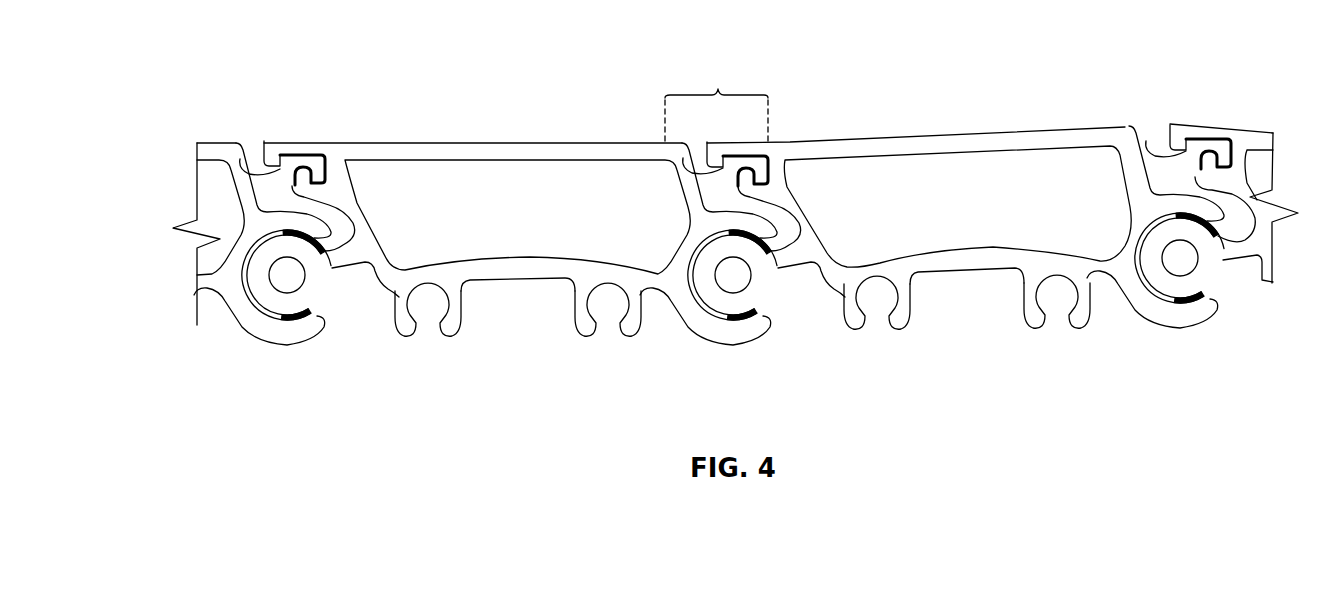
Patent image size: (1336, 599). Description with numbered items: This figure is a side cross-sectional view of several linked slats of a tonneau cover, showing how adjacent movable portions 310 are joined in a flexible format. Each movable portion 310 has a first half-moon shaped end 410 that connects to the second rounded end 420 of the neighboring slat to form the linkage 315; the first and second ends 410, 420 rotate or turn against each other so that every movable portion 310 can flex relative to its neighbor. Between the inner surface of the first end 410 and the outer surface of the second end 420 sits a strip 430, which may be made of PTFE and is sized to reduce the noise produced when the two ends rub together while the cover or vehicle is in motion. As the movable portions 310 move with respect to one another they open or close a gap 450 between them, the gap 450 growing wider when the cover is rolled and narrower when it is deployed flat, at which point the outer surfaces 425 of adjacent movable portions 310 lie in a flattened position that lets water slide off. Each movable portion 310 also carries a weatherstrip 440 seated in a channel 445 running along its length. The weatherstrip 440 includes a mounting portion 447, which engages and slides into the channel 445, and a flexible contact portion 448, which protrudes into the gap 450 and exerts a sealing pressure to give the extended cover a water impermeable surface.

The movable portion 310 is at (483, 197).
The outer surface 425 is at (532, 142).
The flexible contact portion 448 is at (685, 165).
The linkage 315 is at (716, 102).
The mounting portion 447 is at (779, 143).
The gap 450 is at (1138, 139).
The weatherstrip 440 is at (722, 166).
The channel 445 is at (742, 178).
The first half-moon shaped end 410 is at (687, 310).
The strip 430 is at (723, 317).
The second rounded end 420 is at (768, 303).